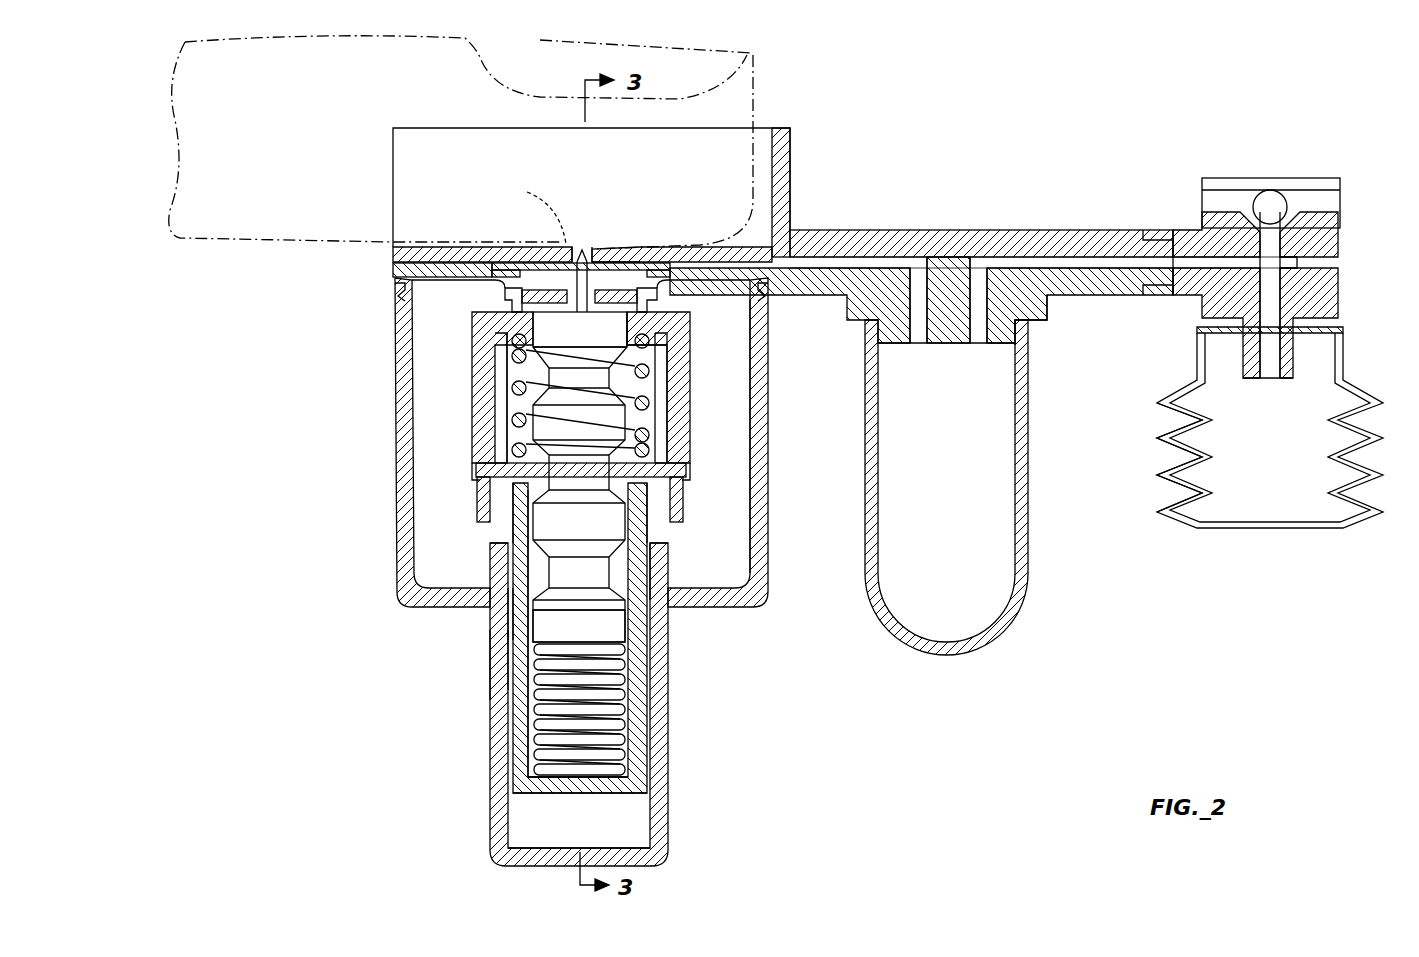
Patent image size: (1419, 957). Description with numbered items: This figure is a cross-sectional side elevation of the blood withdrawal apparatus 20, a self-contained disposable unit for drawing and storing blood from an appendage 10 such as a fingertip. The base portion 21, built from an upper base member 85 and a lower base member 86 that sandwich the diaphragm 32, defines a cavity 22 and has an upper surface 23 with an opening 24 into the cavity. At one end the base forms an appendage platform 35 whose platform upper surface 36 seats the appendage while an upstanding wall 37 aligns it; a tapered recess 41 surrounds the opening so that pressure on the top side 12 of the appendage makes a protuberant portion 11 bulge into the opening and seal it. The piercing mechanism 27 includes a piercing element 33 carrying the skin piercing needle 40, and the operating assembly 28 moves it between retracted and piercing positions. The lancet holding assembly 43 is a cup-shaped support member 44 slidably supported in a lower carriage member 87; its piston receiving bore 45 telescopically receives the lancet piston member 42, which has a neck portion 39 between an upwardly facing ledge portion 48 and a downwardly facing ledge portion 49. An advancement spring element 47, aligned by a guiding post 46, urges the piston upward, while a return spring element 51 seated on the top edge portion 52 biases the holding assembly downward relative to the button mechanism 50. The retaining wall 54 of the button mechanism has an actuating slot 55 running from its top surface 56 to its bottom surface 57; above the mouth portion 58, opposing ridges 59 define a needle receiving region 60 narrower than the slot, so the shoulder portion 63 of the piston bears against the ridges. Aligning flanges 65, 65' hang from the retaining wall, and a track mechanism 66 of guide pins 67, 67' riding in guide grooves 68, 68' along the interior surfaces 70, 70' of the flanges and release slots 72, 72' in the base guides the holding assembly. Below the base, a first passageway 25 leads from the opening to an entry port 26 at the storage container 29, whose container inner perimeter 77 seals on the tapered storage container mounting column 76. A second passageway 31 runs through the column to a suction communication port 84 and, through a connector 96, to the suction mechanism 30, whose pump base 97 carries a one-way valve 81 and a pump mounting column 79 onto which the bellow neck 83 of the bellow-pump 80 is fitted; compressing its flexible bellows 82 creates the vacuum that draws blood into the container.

The appendage 10 is at (757, 120).
The protuberant portion 11 is at (531, 210).
The top side 12 is at (168, 88).
The blood withdrawal apparatus 20 is at (944, 132).
The base portion 21 is at (1076, 330).
The cavity 22 is at (636, 422).
The upper surface 23 is at (968, 230).
The cavity opening 24 is at (568, 256).
The first passageway 25 is at (908, 262).
The entry port 26 is at (918, 345).
The appendage piercing mechanism 27 is at (582, 222).
The operating assembly 28 is at (452, 655).
The storage container 29 is at (968, 654).
The suction mechanism 30 is at (1358, 286).
The second passageway 31 is at (1050, 260).
The diaphragm 32 is at (622, 255).
The piercing element 33 is at (492, 658).
The appendage platform 35 is at (410, 262).
The platform upper surface 36 is at (470, 247).
The upstanding wall 37 is at (792, 168).
The neck portion 39 is at (579, 626).
The skin piercing needle 40 is at (598, 262).
The recess 41 is at (606, 263).
The lancet piston member 42 is at (505, 692).
The lancet holding assembly 43 is at (532, 612).
The cup-shaped support member 44 is at (646, 740).
The piston receiving bore 45 is at (630, 706).
The guiding post 46 is at (555, 733).
The advancement spring element 47 is at (612, 756).
The upwardly facing ledge portion 48 is at (670, 658).
The downwardly facing ledge portion 49 is at (656, 602).
The button mechanism 50 is at (463, 402).
The return spring element 51 is at (650, 412).
The top edge portion 52 is at (515, 470).
The retaining wall 54 is at (665, 335).
The actuating slot 55 is at (548, 320).
The top surface 56 is at (668, 305).
The bottom surface 57 is at (606, 337).
The mouth portion 58 is at (612, 350).
The opposing ridges 59 is at (505, 296).
The needle receiving region 60 is at (592, 312).
The shoulder portion 63 is at (530, 305).
The aligning flange 65 is at (559, 442).
The aligning flange 65' is at (750, 436).
The track mechanism 66 is at (438, 425).
The guide pin 67 is at (450, 481).
The guide pin 67' is at (713, 481).
The guide groove 68 is at (455, 499).
The guide groove 68' is at (707, 499).
The interior surface 70 is at (476, 518).
The interior surface 70' is at (685, 518).
The release slot 72 is at (473, 560).
The release slot 72' is at (691, 560).
The storage container mounting column 76 is at (950, 346).
The container inner perimeter 77 is at (1020, 346).
The pump mounting column 79 is at (1297, 350).
The bellow-pump 80 is at (1252, 547).
The one-way valve 81 is at (1300, 205).
The bellows 82 is at (1165, 505).
The bellow neck 83 is at (1265, 360).
The suction communication port 84 is at (978, 345).
The upper base member 85 is at (1105, 230).
The lower base member 86 is at (1100, 297).
The lower carriage member 87 is at (662, 818).
The connector 96 is at (1173, 230).
The pump base 97 is at (1342, 237).